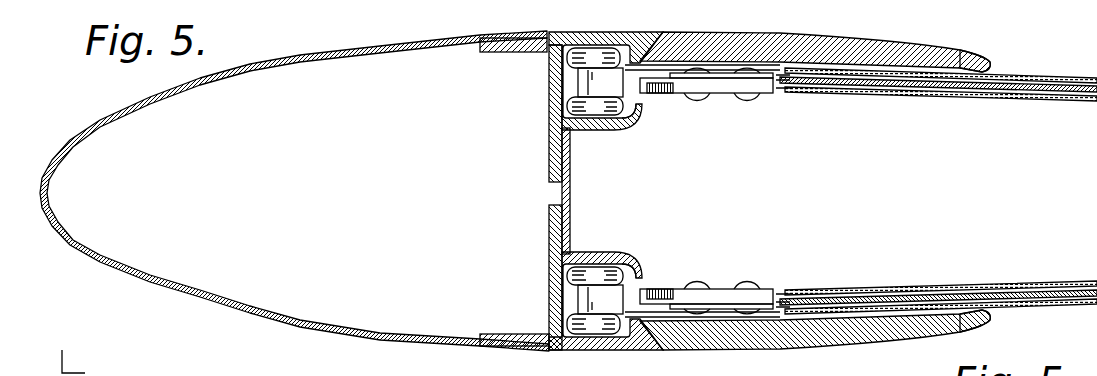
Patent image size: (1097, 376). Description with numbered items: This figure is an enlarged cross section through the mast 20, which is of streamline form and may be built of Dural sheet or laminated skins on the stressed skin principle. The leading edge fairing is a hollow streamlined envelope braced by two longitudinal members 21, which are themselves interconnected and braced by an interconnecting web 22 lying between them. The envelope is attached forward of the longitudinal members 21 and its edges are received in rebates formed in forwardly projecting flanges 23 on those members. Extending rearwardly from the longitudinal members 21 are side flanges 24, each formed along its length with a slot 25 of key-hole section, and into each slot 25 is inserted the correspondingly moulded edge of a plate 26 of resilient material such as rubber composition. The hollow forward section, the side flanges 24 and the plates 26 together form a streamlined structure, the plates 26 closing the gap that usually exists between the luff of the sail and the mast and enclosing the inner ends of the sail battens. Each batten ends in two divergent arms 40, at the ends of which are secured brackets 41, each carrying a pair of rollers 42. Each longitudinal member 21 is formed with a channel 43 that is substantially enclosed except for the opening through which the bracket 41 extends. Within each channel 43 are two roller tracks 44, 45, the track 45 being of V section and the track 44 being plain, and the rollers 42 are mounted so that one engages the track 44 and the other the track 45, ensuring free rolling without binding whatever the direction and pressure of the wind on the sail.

The mast 20 is at (388, 320).
The longitudinal members 21 is at (548, 137).
The interconnecting web 22 is at (572, 192).
The forwardly projecting flanges 23 is at (517, 52).
The side flanges 24 is at (633, 36).
The slot 25 is at (605, 47).
The plates 26 is at (948, 60).
The divergent arms 40 is at (1058, 280).
The brackets 41 is at (668, 82).
The rollers 42 is at (628, 112).
The channel 43 is at (548, 88).
The roller track 44 is at (625, 78).
The roller track 45 is at (548, 110).